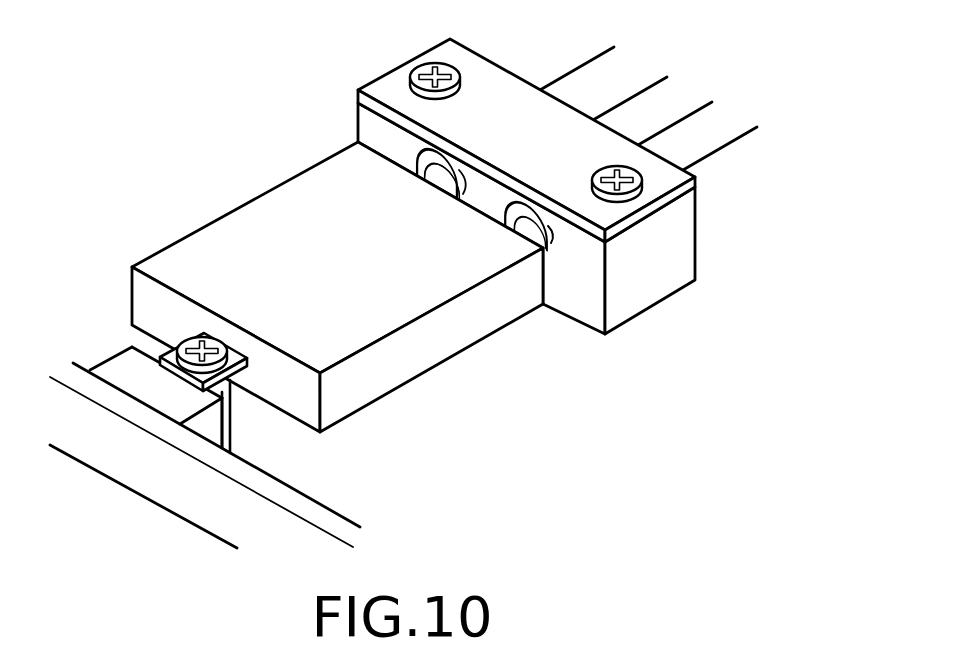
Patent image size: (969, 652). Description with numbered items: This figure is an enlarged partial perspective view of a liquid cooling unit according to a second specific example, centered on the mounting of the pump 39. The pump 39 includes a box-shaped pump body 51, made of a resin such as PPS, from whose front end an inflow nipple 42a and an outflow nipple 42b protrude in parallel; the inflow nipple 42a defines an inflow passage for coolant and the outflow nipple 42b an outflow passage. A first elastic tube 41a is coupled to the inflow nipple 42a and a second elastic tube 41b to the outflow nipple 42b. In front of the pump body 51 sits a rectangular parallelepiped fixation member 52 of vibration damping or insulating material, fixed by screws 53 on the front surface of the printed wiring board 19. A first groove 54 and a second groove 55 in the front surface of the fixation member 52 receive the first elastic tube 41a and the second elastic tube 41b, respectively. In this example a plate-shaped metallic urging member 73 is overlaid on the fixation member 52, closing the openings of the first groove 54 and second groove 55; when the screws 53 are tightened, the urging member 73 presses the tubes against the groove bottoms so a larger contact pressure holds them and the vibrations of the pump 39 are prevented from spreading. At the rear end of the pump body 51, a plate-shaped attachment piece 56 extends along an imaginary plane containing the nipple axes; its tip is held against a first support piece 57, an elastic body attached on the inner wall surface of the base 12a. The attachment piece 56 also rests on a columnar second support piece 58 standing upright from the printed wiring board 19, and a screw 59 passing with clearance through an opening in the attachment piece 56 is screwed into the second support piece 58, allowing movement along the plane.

The base 12a is at (192, 507).
The printed wiring board 19 is at (443, 235).
The pump 39 is at (443, 235).
The first elastic tube 41a is at (592, 70).
The second elastic tube 41b is at (695, 150).
The inflow nipple 42a is at (412, 165).
The outflow nipple 42b is at (506, 224).
The pump body 51 is at (438, 353).
The fixation member 52 is at (675, 247).
The screws 53 is at (427, 62).
The first groove 54 is at (462, 167).
The second groove 55 is at (549, 243).
The attachment piece 56 is at (235, 355).
The first support piece 57 is at (112, 367).
The second support piece 58 is at (231, 428).
The screw 59 is at (205, 338).
The urging member 73 is at (377, 88).